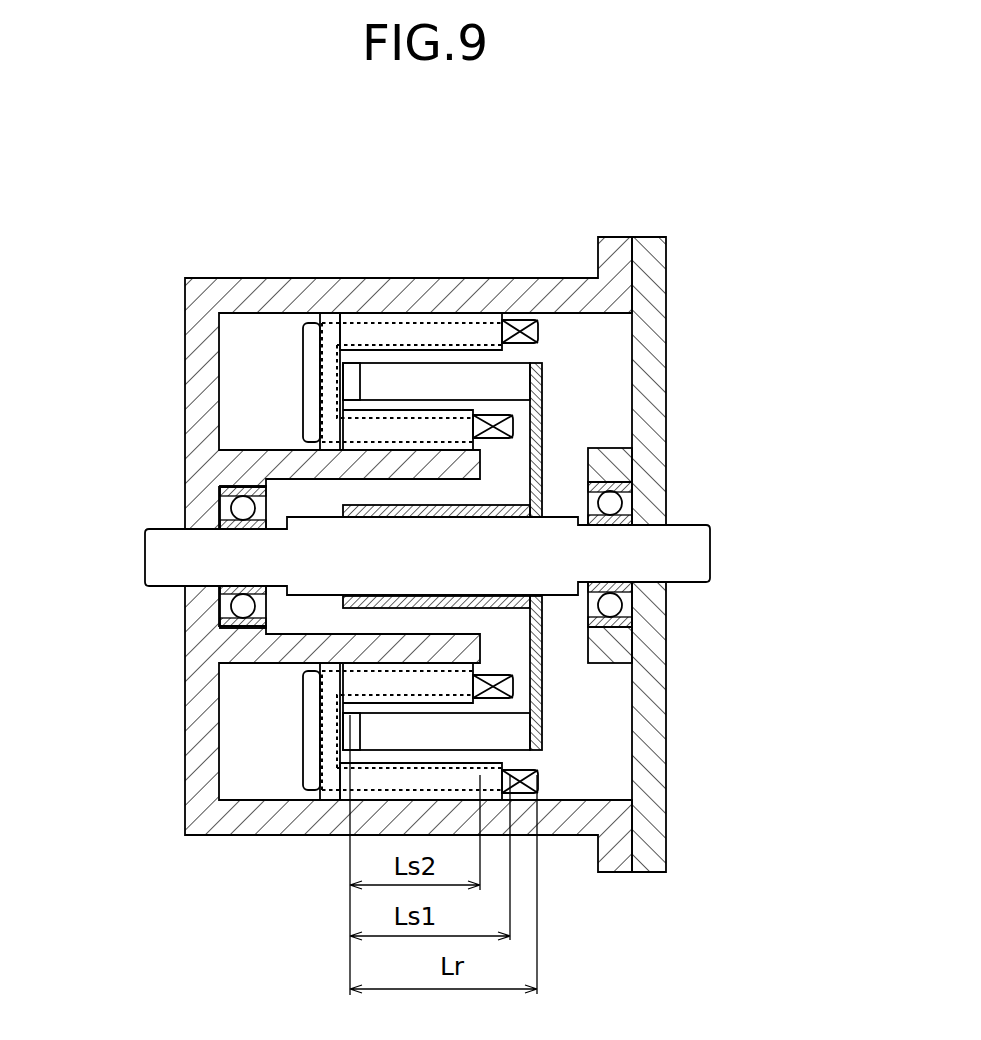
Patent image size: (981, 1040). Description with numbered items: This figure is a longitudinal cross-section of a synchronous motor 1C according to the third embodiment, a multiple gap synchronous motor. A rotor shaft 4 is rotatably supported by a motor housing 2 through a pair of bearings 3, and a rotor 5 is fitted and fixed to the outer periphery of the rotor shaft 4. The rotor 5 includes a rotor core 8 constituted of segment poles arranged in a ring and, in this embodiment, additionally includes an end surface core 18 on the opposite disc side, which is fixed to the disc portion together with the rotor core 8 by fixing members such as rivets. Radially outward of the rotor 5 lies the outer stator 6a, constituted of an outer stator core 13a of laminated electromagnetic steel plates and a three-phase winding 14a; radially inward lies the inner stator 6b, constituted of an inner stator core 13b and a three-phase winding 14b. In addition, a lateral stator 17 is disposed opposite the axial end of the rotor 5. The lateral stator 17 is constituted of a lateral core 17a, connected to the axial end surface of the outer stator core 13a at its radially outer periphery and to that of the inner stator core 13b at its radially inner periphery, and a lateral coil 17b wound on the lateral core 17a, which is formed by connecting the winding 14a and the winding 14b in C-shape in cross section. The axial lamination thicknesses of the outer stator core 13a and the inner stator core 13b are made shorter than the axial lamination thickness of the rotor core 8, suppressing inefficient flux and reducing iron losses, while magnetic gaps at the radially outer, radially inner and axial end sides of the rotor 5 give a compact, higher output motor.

The synchronous motor 1C is at (626, 179).
The motor housing 2 is at (250, 288).
The bearings 3 is at (243, 607).
The rotor shaft 4 is at (695, 538).
The rotor 5 is at (556, 344).
The outer stator 6a is at (567, 203).
The inner stator 6b is at (448, 203).
The rotor core 8 is at (512, 383).
The outer stator core 13a is at (475, 330).
The inner stator core 13b is at (400, 428).
The three-phase winding 14a is at (522, 328).
The three-phase winding 14b is at (493, 415).
The lateral stator 17 is at (118, 342).
The lateral core 17a is at (327, 360).
The lateral coil 17b is at (310, 402).
The end surface core 18 is at (358, 365).